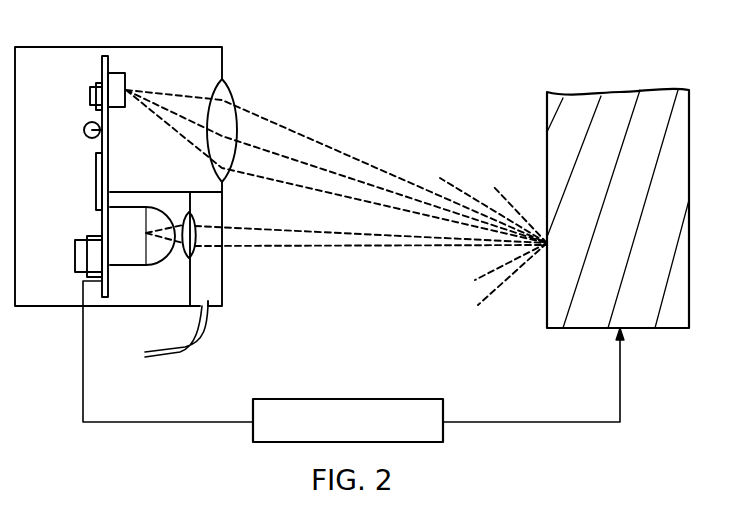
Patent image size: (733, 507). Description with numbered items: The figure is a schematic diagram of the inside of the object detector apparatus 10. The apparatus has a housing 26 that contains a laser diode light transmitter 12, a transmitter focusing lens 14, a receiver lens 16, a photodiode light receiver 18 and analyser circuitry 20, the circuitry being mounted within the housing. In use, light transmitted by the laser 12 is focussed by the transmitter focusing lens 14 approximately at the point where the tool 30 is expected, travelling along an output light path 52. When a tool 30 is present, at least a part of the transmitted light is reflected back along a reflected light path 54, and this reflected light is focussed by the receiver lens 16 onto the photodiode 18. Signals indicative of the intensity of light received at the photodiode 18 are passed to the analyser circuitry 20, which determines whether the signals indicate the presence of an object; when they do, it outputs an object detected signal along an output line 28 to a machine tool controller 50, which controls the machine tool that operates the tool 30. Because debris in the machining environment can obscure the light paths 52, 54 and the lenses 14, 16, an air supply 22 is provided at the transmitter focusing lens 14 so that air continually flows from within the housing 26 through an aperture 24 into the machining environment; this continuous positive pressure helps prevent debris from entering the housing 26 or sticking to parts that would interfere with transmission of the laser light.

The object detector apparatus 10 is at (256, 45).
The laser diode light transmitter 12 is at (122, 255).
The transmitter focusing lens 14 is at (192, 238).
The receiver lens 16 is at (228, 100).
The photodiode light receiver 18 is at (128, 100).
The analyser circuitry 20 is at (96, 190).
The air supply 22 is at (145, 355).
The aperture 24 is at (233, 237).
The housing 26 is at (48, 47).
The output line 28 is at (83, 357).
The tool 30 is at (618, 92).
The machine tool controller 50 is at (352, 399).
The output light path 52 is at (340, 245).
The reflected light path 54 is at (313, 161).